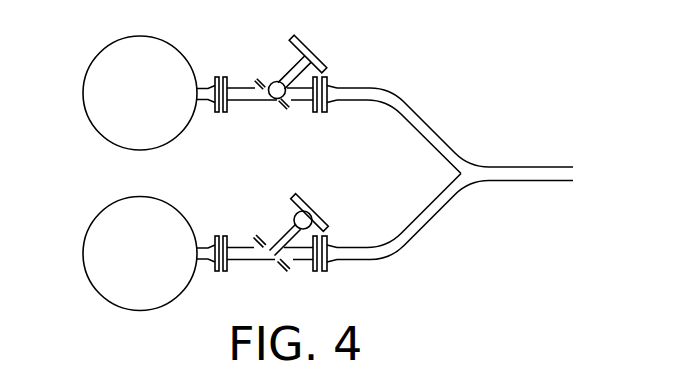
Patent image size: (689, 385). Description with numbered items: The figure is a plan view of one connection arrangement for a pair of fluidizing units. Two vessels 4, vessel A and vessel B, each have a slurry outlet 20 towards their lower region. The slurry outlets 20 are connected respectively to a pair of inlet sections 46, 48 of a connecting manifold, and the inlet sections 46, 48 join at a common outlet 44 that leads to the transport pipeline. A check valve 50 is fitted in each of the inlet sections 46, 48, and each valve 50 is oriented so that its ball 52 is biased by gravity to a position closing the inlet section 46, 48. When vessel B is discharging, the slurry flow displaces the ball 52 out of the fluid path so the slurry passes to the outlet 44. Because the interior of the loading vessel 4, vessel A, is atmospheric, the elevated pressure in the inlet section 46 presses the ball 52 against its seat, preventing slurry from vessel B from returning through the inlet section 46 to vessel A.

The vessel 4 is at (83, 96).
The slurry outlet 20 is at (203, 84).
The common outlet 44 is at (543, 166).
The inlet section 46 is at (392, 88).
The inlet section 48 is at (393, 258).
The check valve 50 is at (283, 67).
The ball 52 is at (275, 101).